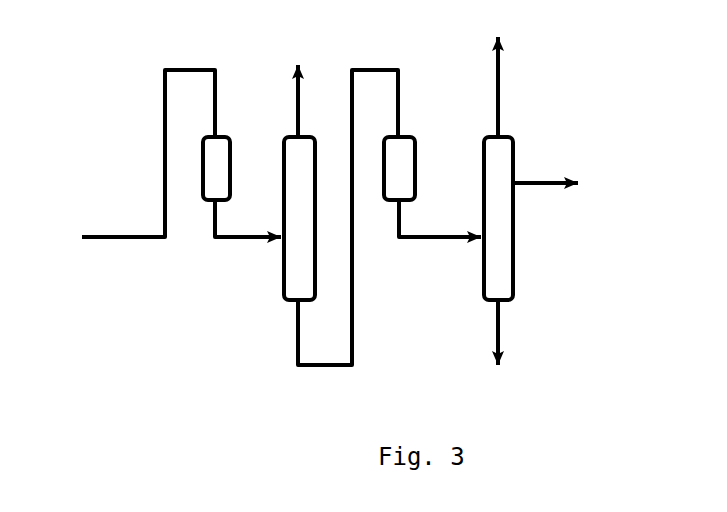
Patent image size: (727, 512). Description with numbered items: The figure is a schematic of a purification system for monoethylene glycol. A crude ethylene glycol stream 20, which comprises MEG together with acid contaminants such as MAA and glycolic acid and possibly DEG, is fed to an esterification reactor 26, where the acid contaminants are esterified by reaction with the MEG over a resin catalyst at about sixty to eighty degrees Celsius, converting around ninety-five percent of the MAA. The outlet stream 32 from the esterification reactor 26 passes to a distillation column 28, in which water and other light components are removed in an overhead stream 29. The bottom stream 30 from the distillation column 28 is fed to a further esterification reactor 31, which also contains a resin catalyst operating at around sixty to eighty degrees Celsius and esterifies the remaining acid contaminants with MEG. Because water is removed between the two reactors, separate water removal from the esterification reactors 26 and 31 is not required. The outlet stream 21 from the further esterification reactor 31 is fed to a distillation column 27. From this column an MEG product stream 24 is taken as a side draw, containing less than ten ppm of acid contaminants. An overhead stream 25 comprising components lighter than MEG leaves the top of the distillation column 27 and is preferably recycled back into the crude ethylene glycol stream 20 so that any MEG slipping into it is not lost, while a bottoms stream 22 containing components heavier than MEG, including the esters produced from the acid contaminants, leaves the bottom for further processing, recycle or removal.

The crude ethylene glycol stream 20 is at (122, 236).
The esterification reactor 26 is at (215, 172).
The outlet stream 32 is at (237, 240).
The distillation column 28 is at (298, 278).
The overhead stream 29 is at (303, 105).
The bottom stream 30 is at (355, 350).
The further esterification reactor 31 is at (397, 160).
The outlet stream 21 is at (433, 240).
The distillation column 27 is at (498, 253).
The overhead stream 25 is at (498, 103).
The MEG product stream 24 is at (557, 177).
The bottoms stream 22 is at (498, 330).